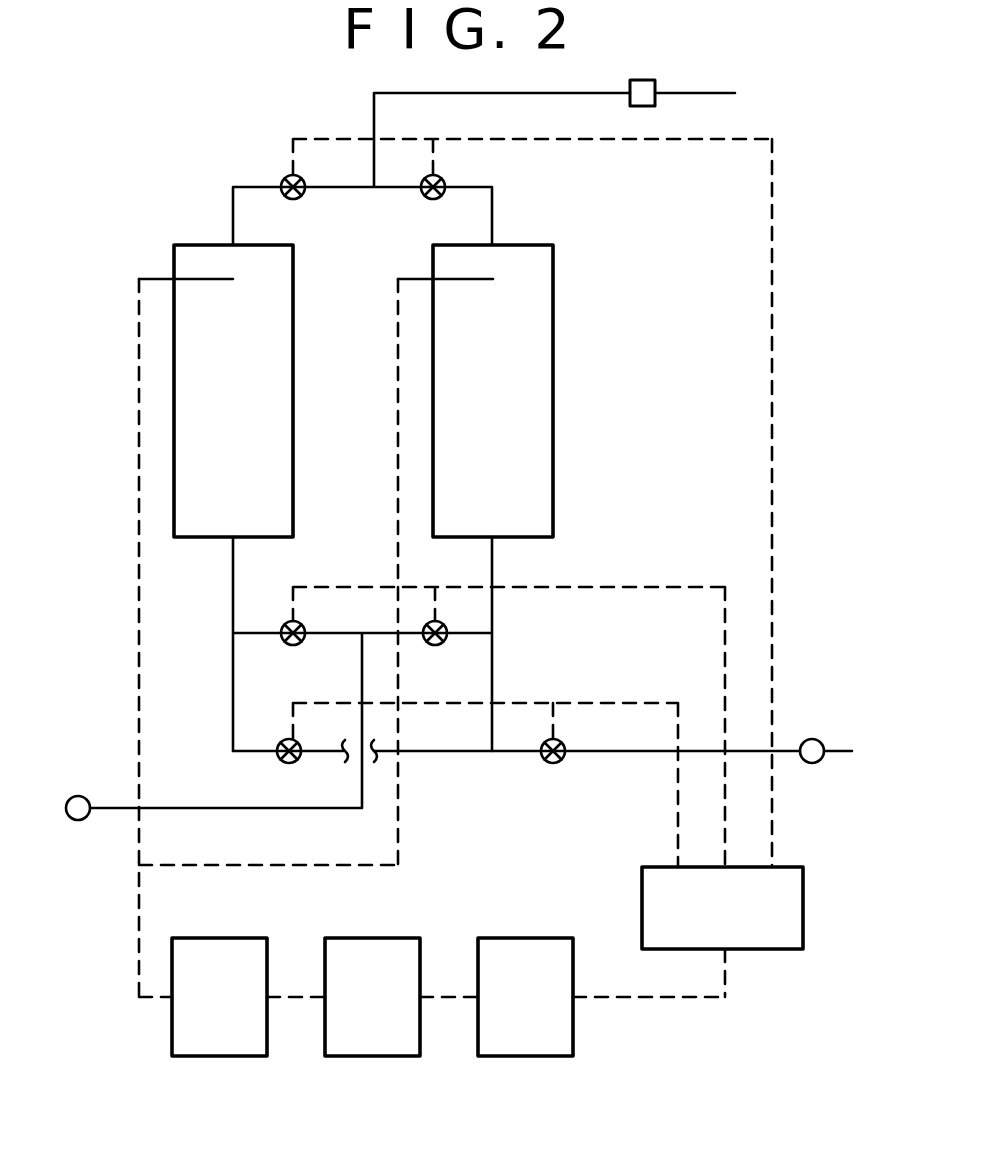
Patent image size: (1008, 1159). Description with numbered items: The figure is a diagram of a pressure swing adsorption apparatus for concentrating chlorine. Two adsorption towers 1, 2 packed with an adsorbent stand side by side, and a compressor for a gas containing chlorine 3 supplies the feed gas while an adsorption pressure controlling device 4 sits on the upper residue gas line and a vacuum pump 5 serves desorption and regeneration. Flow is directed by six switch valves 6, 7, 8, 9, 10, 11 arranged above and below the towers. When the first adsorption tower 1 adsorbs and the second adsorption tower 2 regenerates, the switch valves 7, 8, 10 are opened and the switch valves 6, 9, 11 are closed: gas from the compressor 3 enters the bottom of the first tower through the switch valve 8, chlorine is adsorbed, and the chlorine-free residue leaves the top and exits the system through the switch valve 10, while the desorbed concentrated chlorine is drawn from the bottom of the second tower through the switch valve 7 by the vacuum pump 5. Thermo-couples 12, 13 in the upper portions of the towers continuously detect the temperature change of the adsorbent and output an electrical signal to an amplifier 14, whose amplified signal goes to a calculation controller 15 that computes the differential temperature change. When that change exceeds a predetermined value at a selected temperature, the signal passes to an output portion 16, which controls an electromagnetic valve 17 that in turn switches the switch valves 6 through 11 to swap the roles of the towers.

The adsorption tower 1 is at (293, 485).
The adsorption tower 2 is at (553, 487).
The compressor for a gas containing chlorine 3 is at (78, 796).
The adsorption pressure controlling device 4 is at (641, 80).
The vacuum pump 5 is at (812, 763).
The switch valve 6 is at (294, 762).
The switch valve 7 is at (551, 763).
The switch valve 8 is at (300, 643).
The switch valve 9 is at (443, 643).
The switch valve 10 is at (296, 199).
The switch valve 11 is at (433, 199).
The thermo-couple 12 is at (222, 279).
The thermo-couple 13 is at (487, 279).
The amplifier 14 is at (237, 938).
The calculation controller 15 is at (390, 938).
The output portion 16 is at (548, 938).
The electromagnetic valve 17 is at (642, 877).